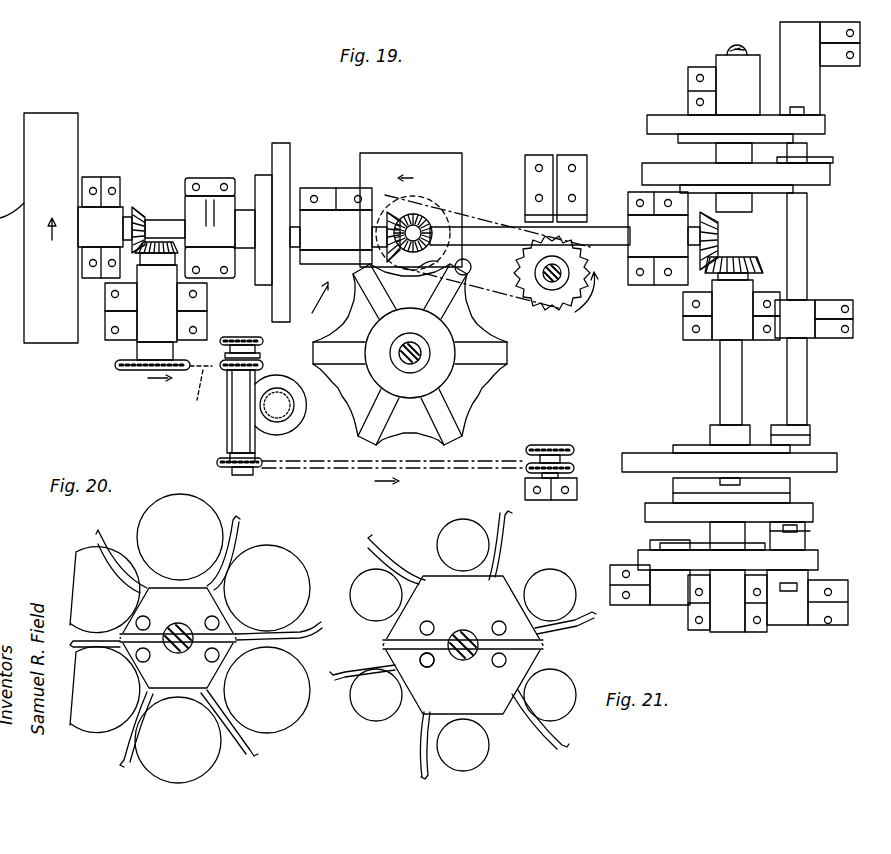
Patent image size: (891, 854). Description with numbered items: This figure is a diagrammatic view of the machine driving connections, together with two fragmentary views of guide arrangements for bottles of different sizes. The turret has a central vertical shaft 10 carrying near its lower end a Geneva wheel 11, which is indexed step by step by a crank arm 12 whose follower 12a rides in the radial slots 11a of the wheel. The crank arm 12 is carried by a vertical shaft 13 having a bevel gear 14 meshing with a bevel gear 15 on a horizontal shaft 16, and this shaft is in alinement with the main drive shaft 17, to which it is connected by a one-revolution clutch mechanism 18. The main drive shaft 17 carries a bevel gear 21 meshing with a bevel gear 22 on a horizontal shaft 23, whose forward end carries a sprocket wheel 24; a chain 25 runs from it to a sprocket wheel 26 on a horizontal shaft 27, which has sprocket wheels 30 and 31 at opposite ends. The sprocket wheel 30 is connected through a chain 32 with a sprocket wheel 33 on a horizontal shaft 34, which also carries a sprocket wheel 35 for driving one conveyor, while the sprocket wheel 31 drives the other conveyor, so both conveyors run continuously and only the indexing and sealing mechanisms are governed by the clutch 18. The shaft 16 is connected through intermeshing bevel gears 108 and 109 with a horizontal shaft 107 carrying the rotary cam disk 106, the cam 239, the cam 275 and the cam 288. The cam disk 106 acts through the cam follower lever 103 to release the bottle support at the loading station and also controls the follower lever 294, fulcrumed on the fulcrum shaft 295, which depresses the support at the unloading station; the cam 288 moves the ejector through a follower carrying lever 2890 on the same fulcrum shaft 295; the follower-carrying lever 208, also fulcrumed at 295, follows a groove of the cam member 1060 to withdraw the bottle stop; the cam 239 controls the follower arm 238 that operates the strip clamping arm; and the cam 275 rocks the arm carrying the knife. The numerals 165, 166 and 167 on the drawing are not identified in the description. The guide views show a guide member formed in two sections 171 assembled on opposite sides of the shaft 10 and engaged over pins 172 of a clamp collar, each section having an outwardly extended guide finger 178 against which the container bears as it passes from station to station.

In FIG. 19, the central vertical shaft 10 is at (422, 354).
In FIG. 20, the central vertical shaft 10 is at (190, 628).
In FIG. 21, the central vertical shaft 10 is at (472, 632).
In FIG. 19, the Geneva wheel 11 is at (482, 335).
In FIG. 19, the radial slots 11a is at (446, 293).
In FIG. 19, the crank arm 12 is at (480, 244).
In FIG. 19, the follower 12a is at (470, 266).
In FIG. 19, the vertical shaft 13 is at (463, 173).
In FIG. 19, the bevel gear 14 is at (416, 214).
In FIG. 19, the bevel gear 15 is at (392, 210).
In FIG. 19, the horizontal shaft 16 is at (600, 230).
In FIG. 19, the main drive shaft 17 is at (164, 218).
In FIG. 19, the one-revolution clutch mechanism 18 is at (283, 192).
In FIG. 19, the bevel gear 21 is at (140, 206).
In FIG. 19, the bevel gear 22 is at (166, 260).
In FIG. 19, the horizontal shaft 23 is at (137, 350).
In FIG. 19, the sprocket wheel 24 is at (135, 372).
In FIG. 19, the chain 25 is at (193, 396).
In FIG. 19, the sprocket wheel 26 is at (262, 366).
In FIG. 19, the horizontal shaft 27 is at (215, 362).
In FIG. 19, the sprocket wheel 30 is at (228, 464).
In FIG. 19, the sprocket wheel 31 is at (246, 338).
In FIG. 19, the chain 32 is at (345, 468).
In FIG. 19, the sprocket wheel 33 is at (526, 470).
In FIG. 19, the horizontal shaft 34 is at (577, 481).
In FIG. 19, the sprocket wheel 35 is at (555, 446).
In FIG. 19, the cam follower lever 103 is at (668, 545).
In FIG. 19, the rotary cam disk 106 is at (650, 560).
In FIG. 19, the horizontal shaft 107 is at (727, 375).
In FIG. 19, the bevel gear 108 is at (762, 256).
In FIG. 19, the bevel gear 109 is at (704, 210).
In FIG. 19, the sprocket wheel 165 is at (562, 300).
In FIG. 19, the chain 166 is at (465, 232).
In FIG. 19, the roller 167 is at (420, 266).
In FIG. 20, the guide sections 171 is at (177, 603).
In FIG. 21, the guide sections 171 is at (493, 572).
In FIG. 20, the pins 172 is at (140, 655).
In FIG. 21, the pins 172 is at (430, 656).
In FIG. 20, the guide finger 178 is at (232, 530).
In FIG. 21, the guide finger 178 is at (390, 557).
In FIG. 19, the follower-carrying lever 208 is at (806, 531).
In FIG. 19, the follower arm 238 is at (800, 112).
In FIG. 19, the cam 239 is at (656, 116).
In FIG. 19, the cam 275 is at (818, 182).
In FIG. 19, the cam 288 is at (648, 460).
In FIG. 19, the follower lever 294 is at (790, 592).
In FIG. 19, the fulcrum shaft 295 is at (796, 398).
In FIG. 19, the cam member 1060 is at (800, 512).
In FIG. 19, the follower carrying lever 2890 is at (720, 481).